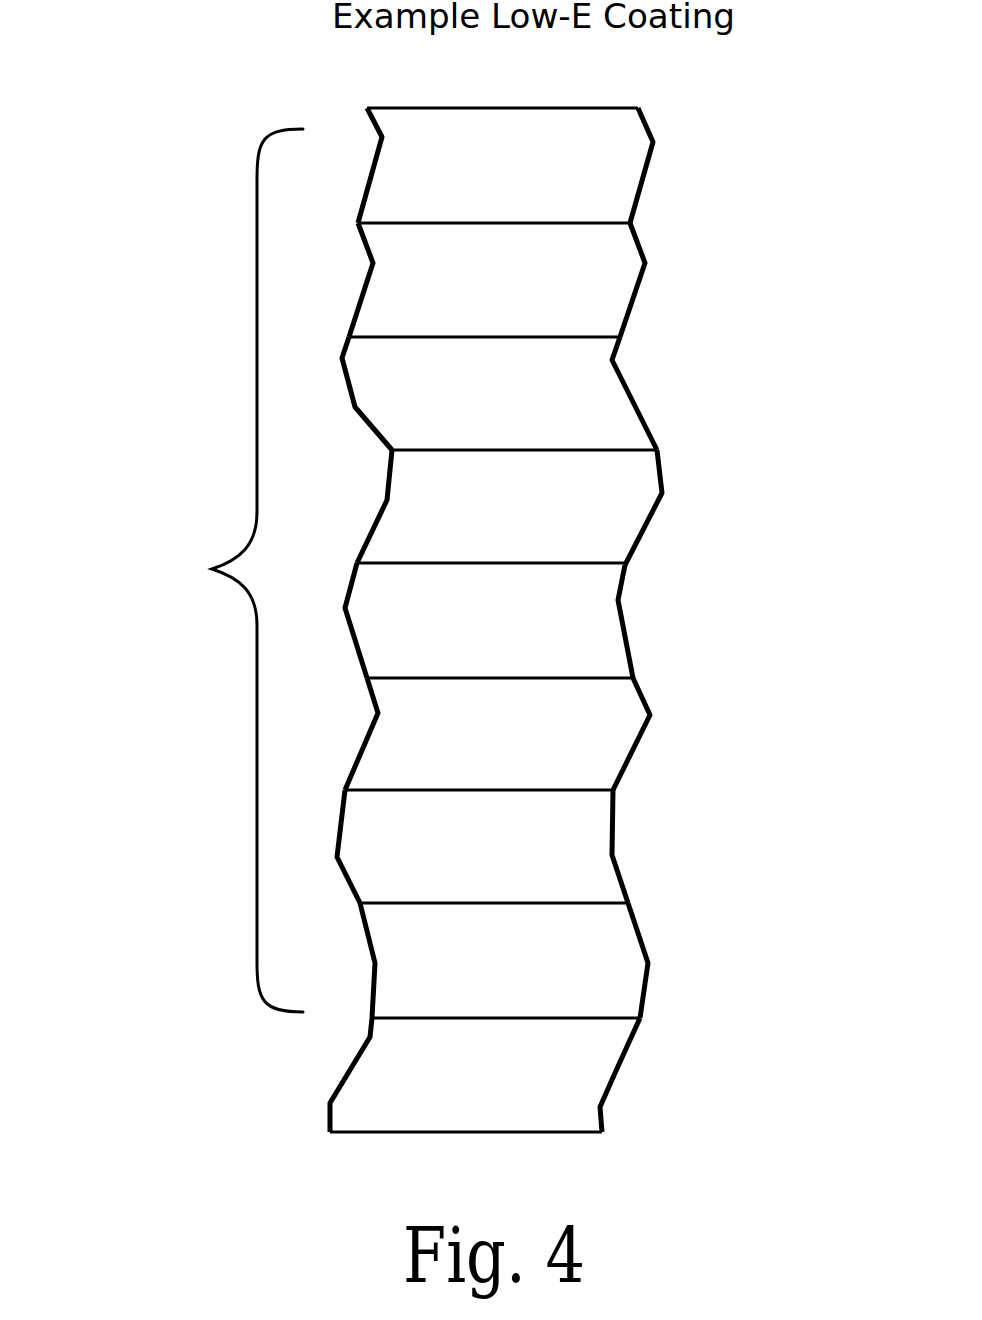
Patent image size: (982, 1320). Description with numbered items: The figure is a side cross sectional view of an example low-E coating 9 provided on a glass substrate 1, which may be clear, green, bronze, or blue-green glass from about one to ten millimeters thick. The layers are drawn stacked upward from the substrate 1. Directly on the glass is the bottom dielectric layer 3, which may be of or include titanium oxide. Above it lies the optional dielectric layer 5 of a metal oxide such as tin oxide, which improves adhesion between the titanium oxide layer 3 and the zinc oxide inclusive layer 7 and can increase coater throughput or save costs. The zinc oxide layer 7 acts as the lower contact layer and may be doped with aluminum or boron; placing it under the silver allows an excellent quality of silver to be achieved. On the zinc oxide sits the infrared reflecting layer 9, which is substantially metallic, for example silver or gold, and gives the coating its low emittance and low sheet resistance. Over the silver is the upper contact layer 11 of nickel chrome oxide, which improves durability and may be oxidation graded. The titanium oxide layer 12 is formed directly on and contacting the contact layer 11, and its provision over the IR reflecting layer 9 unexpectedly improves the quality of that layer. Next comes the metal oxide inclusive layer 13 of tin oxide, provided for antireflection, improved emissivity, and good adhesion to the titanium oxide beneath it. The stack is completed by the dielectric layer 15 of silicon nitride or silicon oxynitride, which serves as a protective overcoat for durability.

The dielectric layer 15 is at (617, 170).
The metal oxide inclusive layer 13 is at (619, 274).
The titanium oxide layer 12 is at (599, 396).
The upper contact layer 11 is at (631, 517).
The IR reflecting layer 9 is at (602, 627).
The zinc oxide inclusive layer 7 is at (610, 740).
The dielectric layer 5 is at (586, 850).
The dielectric layer 3 is at (614, 971).
The substrate 1 is at (602, 1075).